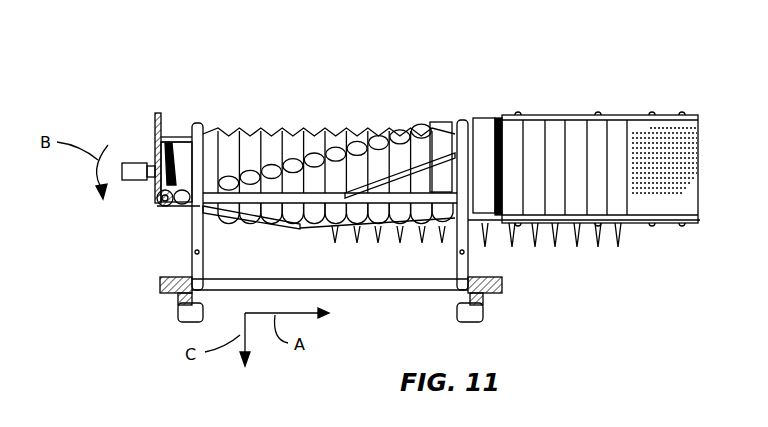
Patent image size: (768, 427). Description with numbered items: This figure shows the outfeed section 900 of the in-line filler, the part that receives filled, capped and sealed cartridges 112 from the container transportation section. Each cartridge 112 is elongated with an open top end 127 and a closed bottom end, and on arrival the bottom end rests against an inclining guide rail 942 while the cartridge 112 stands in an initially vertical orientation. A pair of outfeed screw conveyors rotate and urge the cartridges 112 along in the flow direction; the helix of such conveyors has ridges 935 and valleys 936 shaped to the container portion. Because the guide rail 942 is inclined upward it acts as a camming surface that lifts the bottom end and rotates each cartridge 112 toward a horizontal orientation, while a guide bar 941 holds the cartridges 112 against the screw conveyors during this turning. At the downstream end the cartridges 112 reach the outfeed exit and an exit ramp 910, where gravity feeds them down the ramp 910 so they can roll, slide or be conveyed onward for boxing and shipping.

The outfeed section 900 is at (400, 55).
The roller top edge 935 is at (227, 138).
The rollers 936 is at (287, 128).
The open top end 127 is at (375, 128).
The guide bar 941 is at (408, 142).
The inclining guide rail 942 is at (282, 232).
The filled, capped and sealed cartridges 112 is at (438, 137).
The exit ramp 910 is at (648, 133).